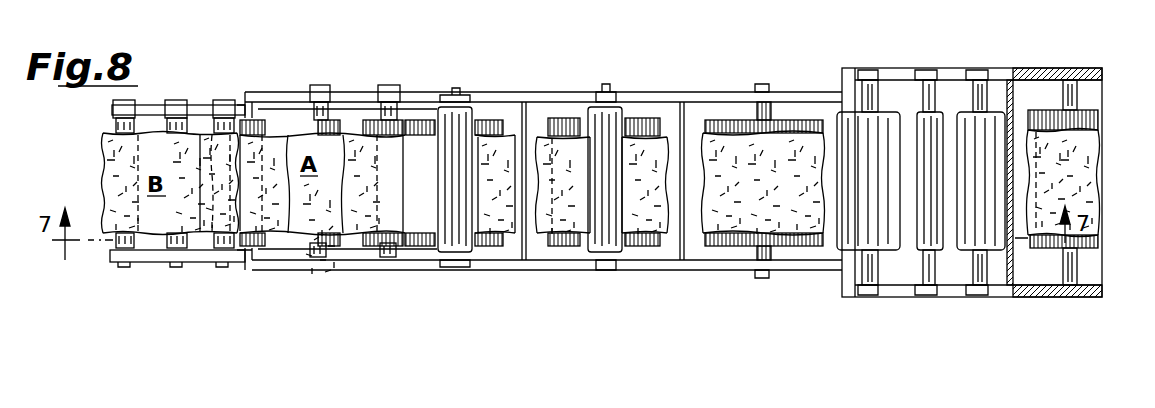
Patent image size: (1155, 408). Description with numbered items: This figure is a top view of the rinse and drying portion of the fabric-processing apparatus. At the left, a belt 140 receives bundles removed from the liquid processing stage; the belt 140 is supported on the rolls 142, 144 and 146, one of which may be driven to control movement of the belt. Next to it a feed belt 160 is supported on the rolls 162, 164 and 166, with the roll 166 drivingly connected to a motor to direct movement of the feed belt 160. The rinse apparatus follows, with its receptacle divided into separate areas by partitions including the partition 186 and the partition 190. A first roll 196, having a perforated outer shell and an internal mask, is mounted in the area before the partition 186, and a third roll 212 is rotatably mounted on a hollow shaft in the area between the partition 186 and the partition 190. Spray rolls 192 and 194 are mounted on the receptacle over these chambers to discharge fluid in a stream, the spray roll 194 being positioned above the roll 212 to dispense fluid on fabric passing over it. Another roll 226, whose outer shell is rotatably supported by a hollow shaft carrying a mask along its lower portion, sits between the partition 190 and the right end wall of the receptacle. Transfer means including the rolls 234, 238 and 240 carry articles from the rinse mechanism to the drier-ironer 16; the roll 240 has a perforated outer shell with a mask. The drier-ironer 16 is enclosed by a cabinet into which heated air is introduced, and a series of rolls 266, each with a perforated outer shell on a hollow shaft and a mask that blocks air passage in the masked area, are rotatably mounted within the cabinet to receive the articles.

The drier-ironer 16 is at (1030, 66).
The belt 140 is at (158, 240).
The roll 142 is at (110, 126).
The roll 144 is at (172, 106).
The roll 146 is at (233, 108).
The feed belt 160 is at (352, 242).
The roll 162 is at (266, 120).
The roll 164 is at (395, 120).
The roll 166 is at (330, 118).
The partition 186 is at (528, 242).
The partition 190 is at (693, 244).
The spray roll 192 is at (470, 116).
The spray roll 194 is at (622, 116).
The first roll 196 is at (497, 246).
The third roll 212 is at (646, 250).
The roll 226 is at (730, 118).
The roll 234 is at (868, 252).
The roll 238 is at (929, 120).
The roll 240 is at (974, 250).
The rolls 266 is at (1050, 262).